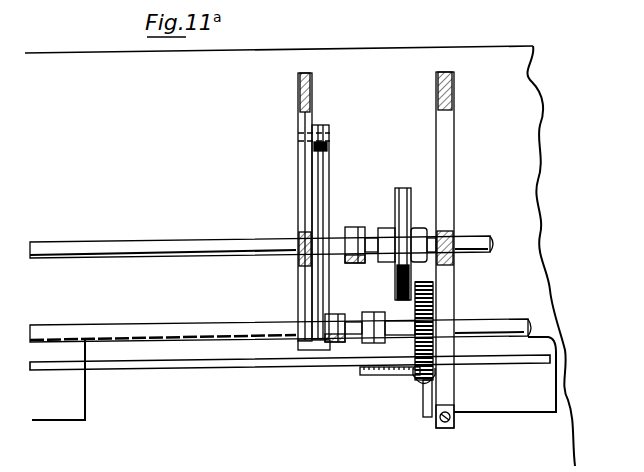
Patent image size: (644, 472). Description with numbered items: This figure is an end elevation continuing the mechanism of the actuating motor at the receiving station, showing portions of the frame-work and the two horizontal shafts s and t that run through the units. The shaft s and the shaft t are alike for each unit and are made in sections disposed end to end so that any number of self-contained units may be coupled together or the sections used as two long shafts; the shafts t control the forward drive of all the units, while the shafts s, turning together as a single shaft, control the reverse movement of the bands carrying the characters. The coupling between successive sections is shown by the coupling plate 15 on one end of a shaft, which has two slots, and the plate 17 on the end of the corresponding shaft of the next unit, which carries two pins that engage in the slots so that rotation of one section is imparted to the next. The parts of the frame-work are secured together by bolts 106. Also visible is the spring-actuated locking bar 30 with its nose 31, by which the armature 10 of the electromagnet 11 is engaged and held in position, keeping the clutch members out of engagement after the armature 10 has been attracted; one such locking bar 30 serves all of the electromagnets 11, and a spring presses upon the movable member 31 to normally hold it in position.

The armature 10 is at (428, 402).
The electromagnet 11 is at (73, 410).
The coupling plate 15 is at (360, 230).
The plate 17 is at (383, 230).
The locking bar 30 is at (197, 364).
The nose 31 is at (410, 374).
The bolts 106 is at (315, 140).
The shaft s is at (100, 244).
The shaft t is at (121, 326).